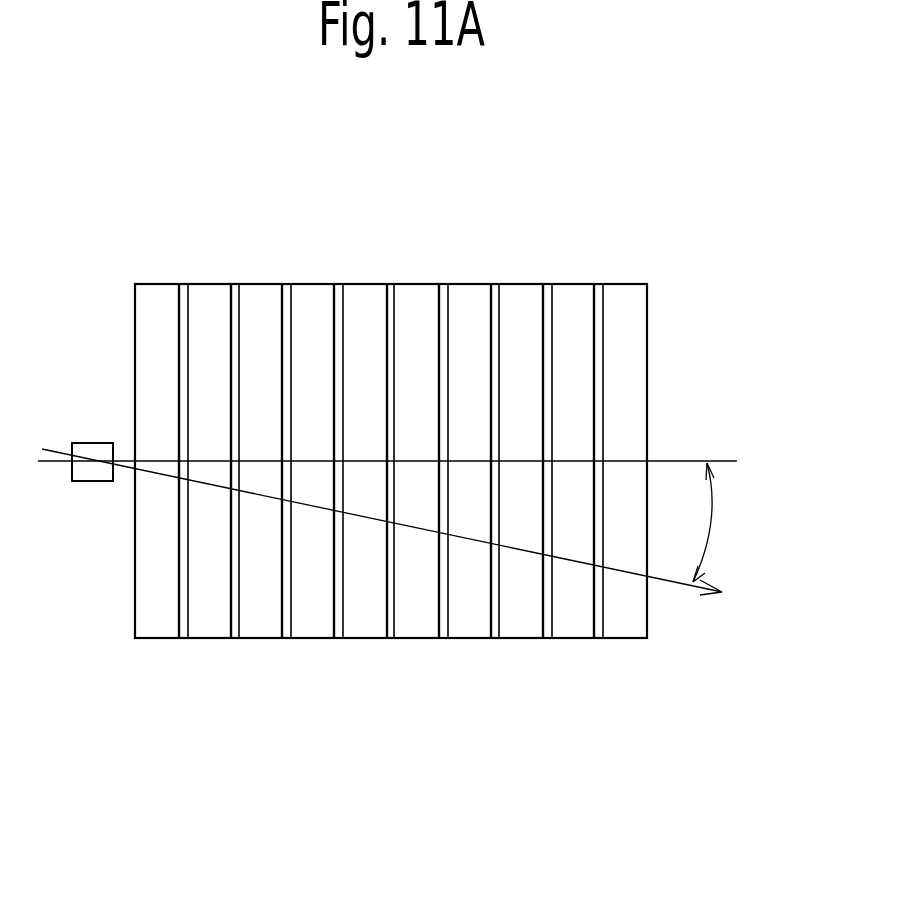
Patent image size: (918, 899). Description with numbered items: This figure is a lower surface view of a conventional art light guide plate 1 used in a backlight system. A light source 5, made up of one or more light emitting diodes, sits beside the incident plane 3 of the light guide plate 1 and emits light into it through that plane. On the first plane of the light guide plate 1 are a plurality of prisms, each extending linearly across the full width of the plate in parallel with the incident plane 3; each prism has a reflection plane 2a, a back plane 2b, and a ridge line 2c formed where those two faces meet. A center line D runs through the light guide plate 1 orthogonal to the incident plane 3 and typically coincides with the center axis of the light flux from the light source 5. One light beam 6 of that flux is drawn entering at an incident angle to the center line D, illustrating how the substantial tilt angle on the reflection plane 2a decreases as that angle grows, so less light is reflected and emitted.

The light guide plate 1 is at (475, 382).
The reflection plane 2a is at (313, 290).
The back plane 2b is at (390, 298).
The ridge line 2c is at (492, 296).
The incident plane 3 is at (134, 572).
The light source 5 is at (92, 442).
The light beam 6 is at (668, 584).
The center line D is at (688, 460).